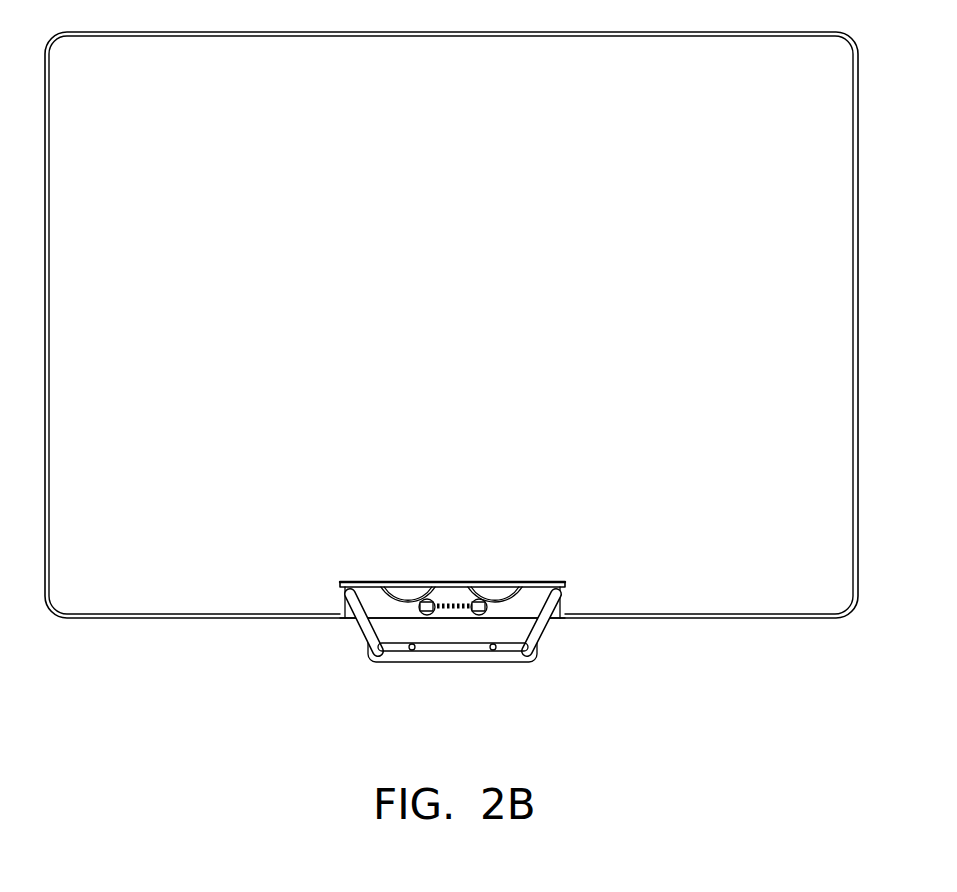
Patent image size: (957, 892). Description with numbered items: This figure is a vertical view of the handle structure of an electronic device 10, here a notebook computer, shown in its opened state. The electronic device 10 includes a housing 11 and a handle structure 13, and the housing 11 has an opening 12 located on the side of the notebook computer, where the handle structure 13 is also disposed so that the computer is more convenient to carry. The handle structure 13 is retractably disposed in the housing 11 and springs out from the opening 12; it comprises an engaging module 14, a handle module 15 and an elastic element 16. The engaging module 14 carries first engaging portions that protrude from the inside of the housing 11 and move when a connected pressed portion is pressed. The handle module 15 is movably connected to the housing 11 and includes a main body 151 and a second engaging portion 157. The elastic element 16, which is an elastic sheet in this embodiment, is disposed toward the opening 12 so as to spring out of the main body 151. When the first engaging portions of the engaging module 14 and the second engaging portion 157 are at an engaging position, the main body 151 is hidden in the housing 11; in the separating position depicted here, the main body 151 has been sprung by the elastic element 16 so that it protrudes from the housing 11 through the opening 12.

The electronic device 10 is at (938, 57).
The housing 11 is at (800, 113).
The opening 12 is at (347, 620).
The handle structure 13 is at (565, 725).
The engaging module 14 is at (452, 606).
The handle module 15 is at (509, 662).
The main body 151 is at (380, 664).
The second engaging portion 157 is at (437, 664).
The elastic element 16 is at (492, 602).